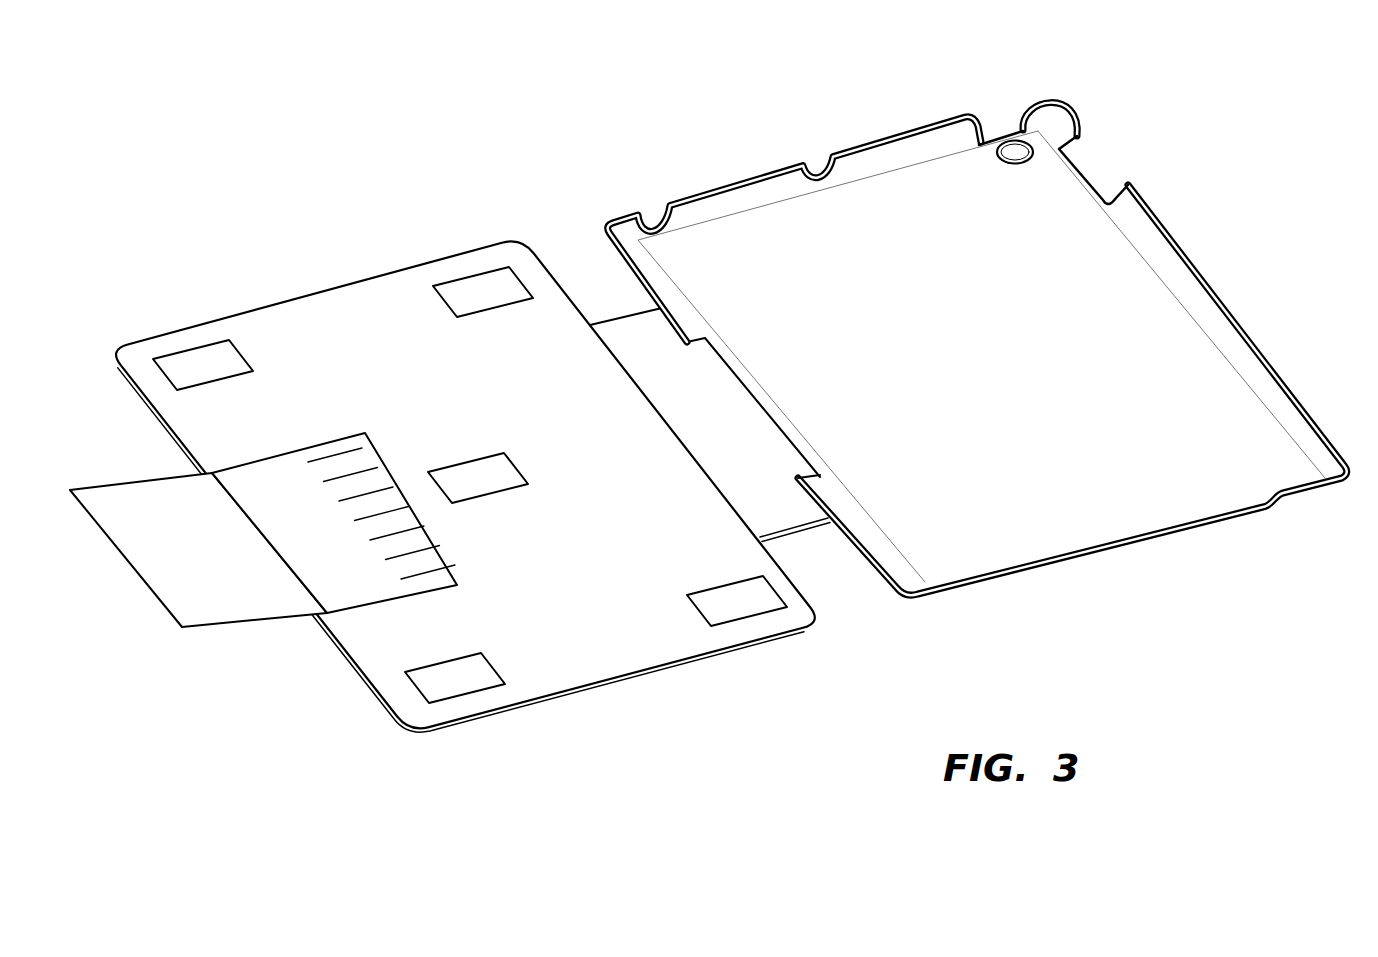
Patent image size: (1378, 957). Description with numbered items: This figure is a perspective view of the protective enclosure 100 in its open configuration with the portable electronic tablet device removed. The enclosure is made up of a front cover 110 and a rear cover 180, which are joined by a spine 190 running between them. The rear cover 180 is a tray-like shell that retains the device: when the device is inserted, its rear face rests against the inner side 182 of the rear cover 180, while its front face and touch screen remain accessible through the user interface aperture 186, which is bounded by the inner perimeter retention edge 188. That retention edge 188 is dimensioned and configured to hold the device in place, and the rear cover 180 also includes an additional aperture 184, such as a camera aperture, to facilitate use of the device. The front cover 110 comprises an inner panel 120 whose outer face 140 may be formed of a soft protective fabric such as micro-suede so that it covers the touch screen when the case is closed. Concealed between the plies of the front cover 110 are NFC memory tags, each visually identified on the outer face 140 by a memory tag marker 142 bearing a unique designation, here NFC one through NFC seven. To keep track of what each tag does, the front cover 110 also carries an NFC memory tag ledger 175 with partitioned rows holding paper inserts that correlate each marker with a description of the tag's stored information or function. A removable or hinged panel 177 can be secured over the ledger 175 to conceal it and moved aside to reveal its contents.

The protective enclosure 100 is at (1155, 87).
The front cover 110 is at (349, 673).
The inner panel 120 is at (580, 650).
The outer face 140 is at (373, 628).
The memory tag marker 142 is at (478, 288).
The NFC memory tag ledger 175 is at (292, 452).
The hinged panel 177 is at (185, 583).
The rear cover 180 is at (980, 321).
The inner side 182 is at (1112, 512).
The aperture 184 is at (1013, 152).
The user interface aperture 186 is at (1253, 372).
The inner perimeter retention edge 188 is at (733, 183).
The spine 190 is at (793, 530).